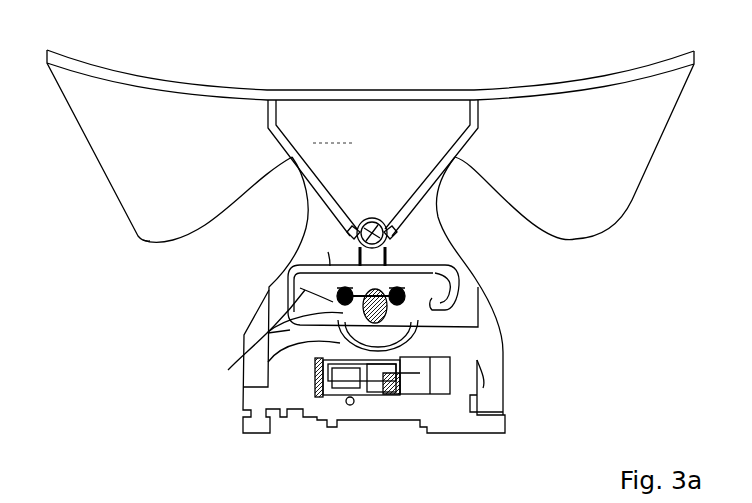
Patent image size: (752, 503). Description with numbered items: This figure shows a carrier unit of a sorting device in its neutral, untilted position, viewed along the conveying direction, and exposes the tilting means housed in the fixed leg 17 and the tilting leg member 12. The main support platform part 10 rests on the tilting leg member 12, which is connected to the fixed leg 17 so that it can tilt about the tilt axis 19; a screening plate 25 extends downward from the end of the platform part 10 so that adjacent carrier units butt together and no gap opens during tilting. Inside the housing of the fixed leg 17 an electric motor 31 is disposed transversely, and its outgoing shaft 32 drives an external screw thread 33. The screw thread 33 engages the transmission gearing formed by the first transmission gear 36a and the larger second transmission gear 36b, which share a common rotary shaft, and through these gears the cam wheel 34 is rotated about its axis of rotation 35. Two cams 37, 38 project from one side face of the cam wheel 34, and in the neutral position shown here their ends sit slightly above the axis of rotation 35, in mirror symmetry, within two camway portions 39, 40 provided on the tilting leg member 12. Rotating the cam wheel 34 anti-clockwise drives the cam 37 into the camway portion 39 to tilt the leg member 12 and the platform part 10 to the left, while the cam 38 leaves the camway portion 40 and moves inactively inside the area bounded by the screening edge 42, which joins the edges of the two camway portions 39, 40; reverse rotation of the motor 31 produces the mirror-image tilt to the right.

The main support platform part 10 is at (438, 90).
The tilting leg member 12 is at (434, 227).
The fixed leg 17 is at (507, 373).
The tilt axis 19 is at (369, 218).
The screening plate 25 is at (165, 210).
The electric motor 31 is at (432, 393).
The outgoing shaft 32 is at (380, 356).
The external screw thread 33 is at (350, 405).
The cam wheel 34 is at (455, 270).
The axis of rotation 35 is at (372, 357).
The first transmission gear 36a is at (268, 372).
The second transmission gear 36b is at (267, 384).
The cam 37 is at (295, 275).
The cam 38 is at (462, 272).
The camway portion 39 is at (268, 333).
The camway portion 40 is at (480, 328).
The screening edge 42 is at (328, 252).